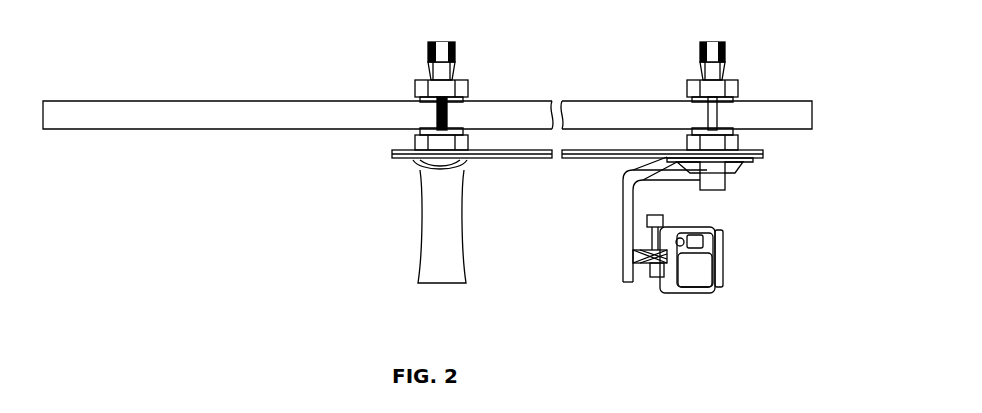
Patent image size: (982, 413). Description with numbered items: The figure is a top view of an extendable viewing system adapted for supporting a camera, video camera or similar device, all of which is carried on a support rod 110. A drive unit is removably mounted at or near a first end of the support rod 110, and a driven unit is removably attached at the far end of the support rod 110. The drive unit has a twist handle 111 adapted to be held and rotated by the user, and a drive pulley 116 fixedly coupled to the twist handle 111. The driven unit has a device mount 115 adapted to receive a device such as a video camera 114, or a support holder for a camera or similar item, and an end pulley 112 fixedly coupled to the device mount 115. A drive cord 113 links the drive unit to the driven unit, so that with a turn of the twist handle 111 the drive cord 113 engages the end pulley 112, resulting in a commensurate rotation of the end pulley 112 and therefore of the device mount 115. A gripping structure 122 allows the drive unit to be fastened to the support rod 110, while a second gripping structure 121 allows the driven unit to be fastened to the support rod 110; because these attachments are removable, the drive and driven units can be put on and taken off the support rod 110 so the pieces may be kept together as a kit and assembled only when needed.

The support rod 110 is at (240, 100).
The twist handle 111 is at (418, 253).
The end pulley 112 is at (760, 160).
The drive cord 113 is at (518, 152).
The video camera 114 is at (721, 271).
The device mount 115 is at (623, 220).
The drive pulley 116 is at (390, 155).
The second gripping structure 121 is at (725, 43).
The gripping structure 122 is at (428, 55).